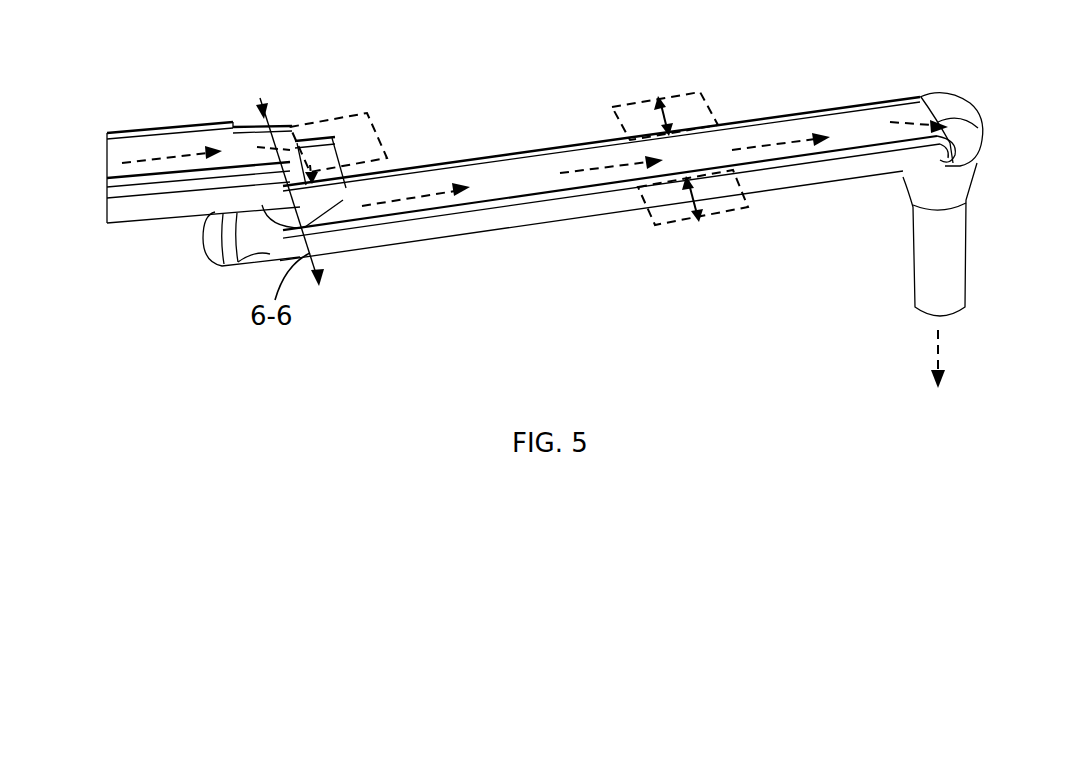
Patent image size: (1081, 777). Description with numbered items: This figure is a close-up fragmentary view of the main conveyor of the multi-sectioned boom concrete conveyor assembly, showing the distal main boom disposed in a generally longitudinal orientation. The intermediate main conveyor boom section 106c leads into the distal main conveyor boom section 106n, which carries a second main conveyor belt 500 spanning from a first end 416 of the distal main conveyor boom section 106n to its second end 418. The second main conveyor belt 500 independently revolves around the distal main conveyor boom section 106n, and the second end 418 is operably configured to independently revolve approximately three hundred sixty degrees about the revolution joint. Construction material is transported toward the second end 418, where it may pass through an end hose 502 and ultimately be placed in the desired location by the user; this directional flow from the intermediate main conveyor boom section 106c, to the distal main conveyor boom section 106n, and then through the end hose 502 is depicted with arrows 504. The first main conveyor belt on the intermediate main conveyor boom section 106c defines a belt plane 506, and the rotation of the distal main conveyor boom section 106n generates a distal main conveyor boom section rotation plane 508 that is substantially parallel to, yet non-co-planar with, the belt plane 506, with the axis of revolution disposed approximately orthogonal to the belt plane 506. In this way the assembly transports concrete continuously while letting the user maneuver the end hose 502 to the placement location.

The second main conveyor belt 500 is at (543, 170).
The end hose 502 is at (955, 272).
The arrows 504 is at (160, 157).
The belt plane 506 is at (343, 118).
The distal main conveyor boom section rotation plane 508 is at (688, 93).
The first end 416 is at (242, 267).
The second end 418 is at (914, 85).
The intermediate main conveyor boom section 106c is at (217, 122).
The distal main conveyor boom section 106n is at (382, 247).